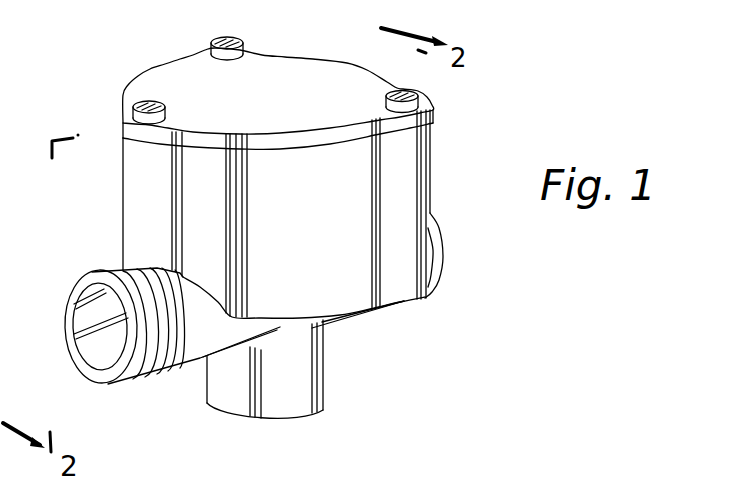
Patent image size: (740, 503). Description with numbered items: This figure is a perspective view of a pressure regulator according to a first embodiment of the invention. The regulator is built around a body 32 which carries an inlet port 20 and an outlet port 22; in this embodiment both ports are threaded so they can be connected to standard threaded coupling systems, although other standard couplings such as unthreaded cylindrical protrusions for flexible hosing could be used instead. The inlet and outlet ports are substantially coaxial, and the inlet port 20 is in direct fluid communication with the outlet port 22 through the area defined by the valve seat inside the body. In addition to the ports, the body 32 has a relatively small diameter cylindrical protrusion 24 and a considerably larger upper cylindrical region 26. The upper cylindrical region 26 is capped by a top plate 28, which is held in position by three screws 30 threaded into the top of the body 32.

The inlet port 20 is at (437, 288).
The outlet port 22 is at (113, 385).
The cylindrical protrusion 24 is at (228, 402).
The upper cylindrical region 26 is at (274, 218).
The top plate 28 is at (292, 67).
The screws 30 is at (142, 100).
The body 32 is at (362, 332).